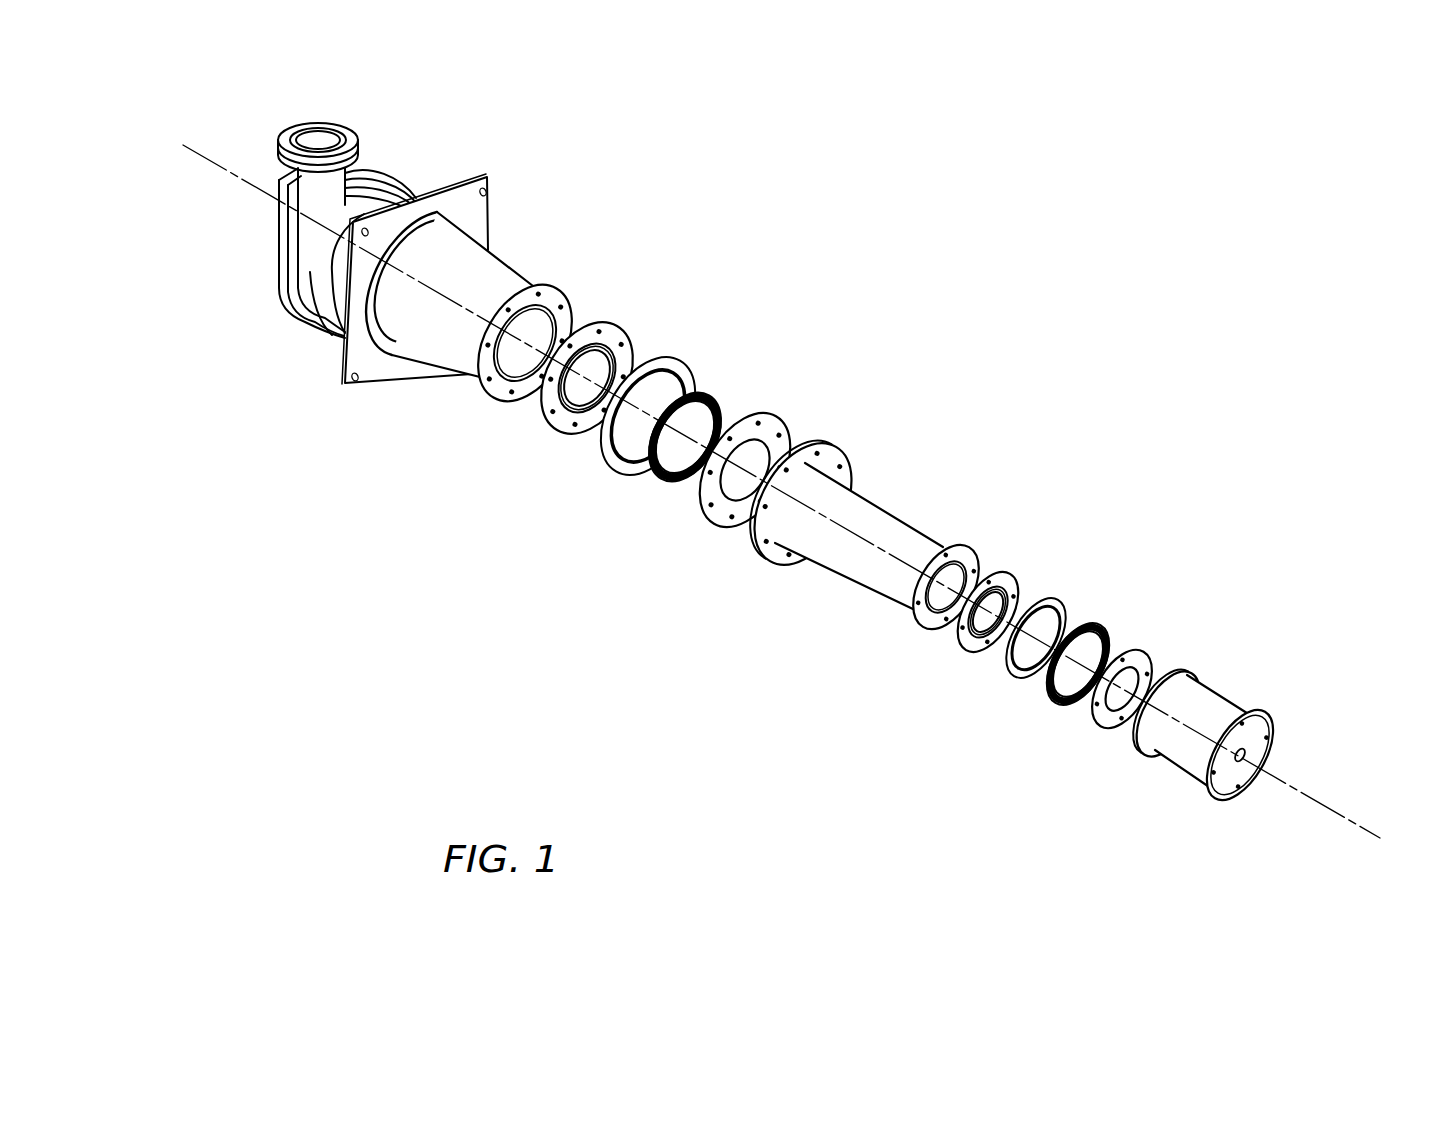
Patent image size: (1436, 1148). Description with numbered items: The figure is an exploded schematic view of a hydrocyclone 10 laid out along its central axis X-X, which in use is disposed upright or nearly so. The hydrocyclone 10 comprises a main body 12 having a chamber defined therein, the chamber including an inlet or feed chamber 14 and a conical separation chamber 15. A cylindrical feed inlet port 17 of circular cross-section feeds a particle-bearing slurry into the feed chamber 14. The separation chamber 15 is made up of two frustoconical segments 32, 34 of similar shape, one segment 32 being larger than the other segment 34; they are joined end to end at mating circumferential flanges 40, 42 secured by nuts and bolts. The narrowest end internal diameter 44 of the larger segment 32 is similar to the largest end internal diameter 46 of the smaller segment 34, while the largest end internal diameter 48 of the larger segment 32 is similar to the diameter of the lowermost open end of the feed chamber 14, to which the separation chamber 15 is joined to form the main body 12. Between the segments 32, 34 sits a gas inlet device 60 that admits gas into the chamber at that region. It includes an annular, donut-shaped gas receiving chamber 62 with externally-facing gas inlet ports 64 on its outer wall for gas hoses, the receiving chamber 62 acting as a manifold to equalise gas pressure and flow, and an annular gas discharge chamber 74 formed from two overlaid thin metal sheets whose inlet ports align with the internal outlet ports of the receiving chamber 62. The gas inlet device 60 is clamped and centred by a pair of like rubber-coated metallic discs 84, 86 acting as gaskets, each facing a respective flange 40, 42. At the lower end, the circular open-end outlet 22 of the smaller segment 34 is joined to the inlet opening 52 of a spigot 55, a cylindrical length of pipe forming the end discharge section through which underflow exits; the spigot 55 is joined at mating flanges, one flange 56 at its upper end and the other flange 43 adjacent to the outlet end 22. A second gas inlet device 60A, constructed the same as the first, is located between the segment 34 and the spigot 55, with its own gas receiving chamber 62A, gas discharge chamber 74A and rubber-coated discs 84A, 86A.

The hydrocyclone 10 is at (785, 501).
The main body 12 is at (1028, 902).
The inlet feed chamber 14 is at (232, 302).
The conical separation chamber 15 is at (1065, 837).
The cylindrical feed inlet port 17 is at (320, 135).
The circular open-end outlet 22 is at (940, 600).
The frustoconical segment 32 is at (482, 273).
The frustoconical segment 34 is at (861, 553).
The circumferential flange 40 is at (545, 296).
The circumferential flange 42 is at (814, 518).
The flange 43 is at (917, 623).
The narrowest end internal diameter 44 is at (547, 327).
The largest end internal diameter 46 is at (777, 548).
The largest end internal diameter 48 is at (460, 228).
The inlet opening 52 is at (1200, 728).
The spigot 55 is at (1210, 768).
The flange 56 is at (1154, 754).
The gas inlet device 60 is at (660, 425).
The second gas inlet device 60A is at (1060, 640).
The gas receiving chamber 62 is at (681, 394).
The gas receiving chamber 62A is at (1055, 602).
The externally-facing gas inlet ports 64 is at (650, 362).
The gas discharge chamber 74 is at (715, 405).
The gas discharge chamber 74A is at (1098, 626).
The rubber-coated metallic disc 84 is at (620, 333).
The rubber-coated metallic disc 84A is at (1005, 578).
The rubber-coated metallic disc 86 is at (773, 425).
The rubber-coated metallic disc 86A is at (1143, 653).